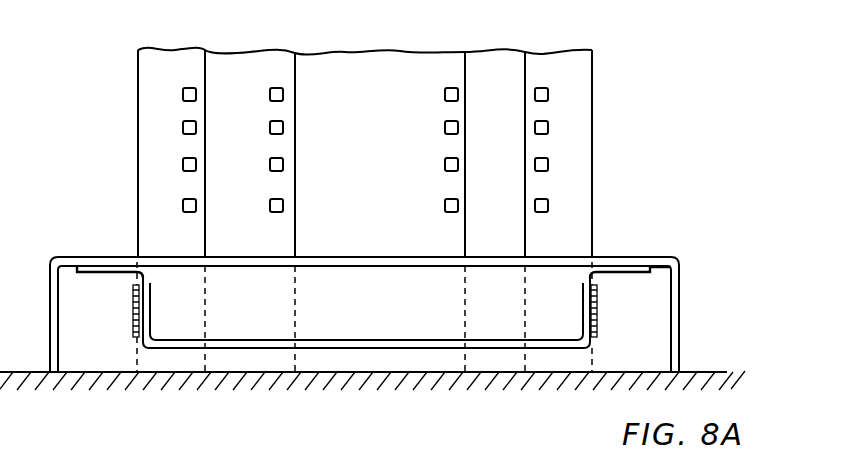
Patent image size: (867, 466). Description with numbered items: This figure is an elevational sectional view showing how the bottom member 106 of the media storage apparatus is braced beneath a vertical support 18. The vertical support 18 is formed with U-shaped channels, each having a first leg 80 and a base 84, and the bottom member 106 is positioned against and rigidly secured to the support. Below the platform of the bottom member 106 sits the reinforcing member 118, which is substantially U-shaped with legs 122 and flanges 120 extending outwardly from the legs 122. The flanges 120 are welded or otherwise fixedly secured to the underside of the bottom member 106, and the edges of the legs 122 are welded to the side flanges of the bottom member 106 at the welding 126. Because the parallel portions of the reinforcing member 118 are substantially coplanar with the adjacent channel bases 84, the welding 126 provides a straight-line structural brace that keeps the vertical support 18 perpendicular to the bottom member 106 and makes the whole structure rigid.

The vertical support 18 is at (335, 53).
The first leg 80 is at (553, 52).
The base 84 is at (595, 108).
The bottom member 106 is at (682, 318).
The reinforcing member 118 is at (347, 337).
The flanges 120 is at (100, 273).
The legs 122 is at (150, 283).
The welding 126 is at (134, 326).